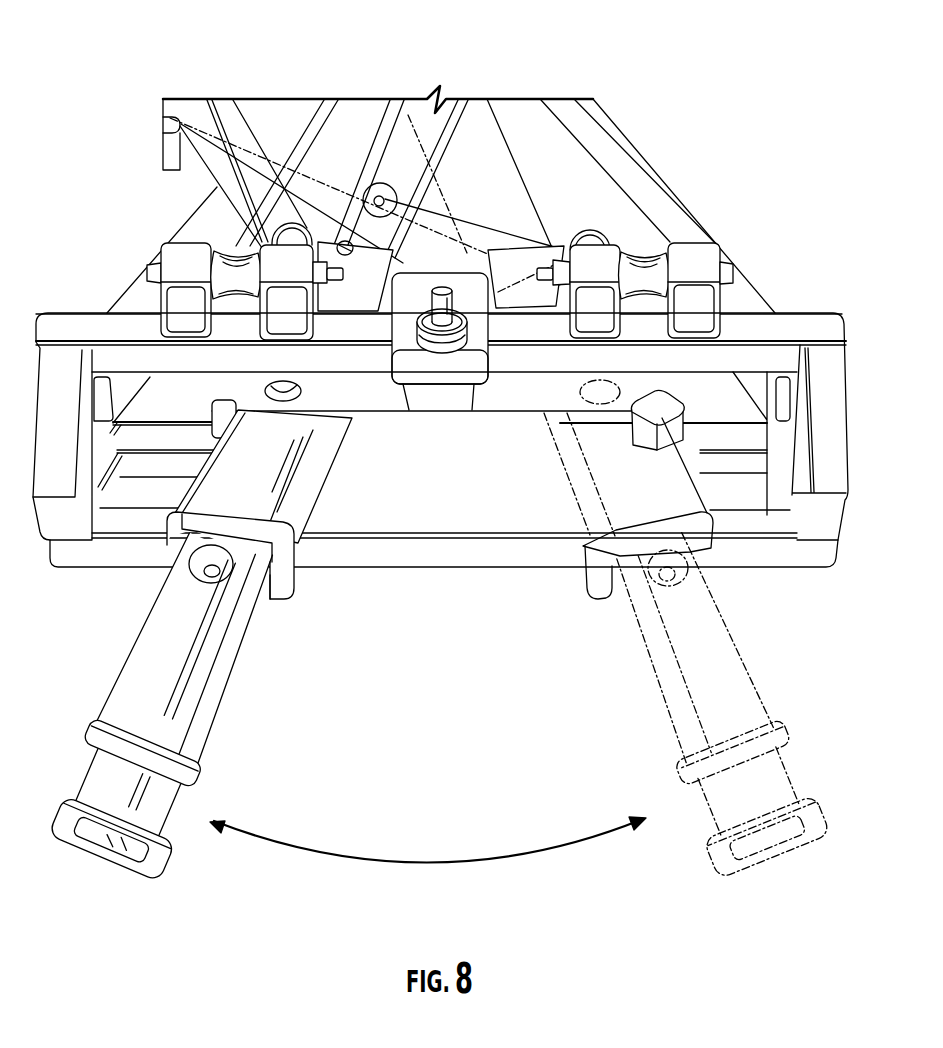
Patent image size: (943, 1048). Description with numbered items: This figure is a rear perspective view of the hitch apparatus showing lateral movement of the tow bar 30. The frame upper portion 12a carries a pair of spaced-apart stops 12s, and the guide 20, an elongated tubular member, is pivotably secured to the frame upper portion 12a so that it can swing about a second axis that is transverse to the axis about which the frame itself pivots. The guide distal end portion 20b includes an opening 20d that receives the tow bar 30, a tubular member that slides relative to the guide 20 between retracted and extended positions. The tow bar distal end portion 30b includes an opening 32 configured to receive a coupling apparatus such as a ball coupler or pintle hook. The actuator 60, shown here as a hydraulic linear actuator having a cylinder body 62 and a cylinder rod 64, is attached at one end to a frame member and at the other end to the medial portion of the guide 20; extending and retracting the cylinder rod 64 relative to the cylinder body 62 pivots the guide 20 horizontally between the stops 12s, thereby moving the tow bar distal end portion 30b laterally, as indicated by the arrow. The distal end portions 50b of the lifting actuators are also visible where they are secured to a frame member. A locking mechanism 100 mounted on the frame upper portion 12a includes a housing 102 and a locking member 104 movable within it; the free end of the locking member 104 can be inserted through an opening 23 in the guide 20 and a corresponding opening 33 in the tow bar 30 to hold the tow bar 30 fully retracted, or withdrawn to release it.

The frame upper portion 12a is at (590, 66).
The stops 12s is at (214, 433).
The guide 20 is at (305, 487).
The guide distal end portion 20b is at (295, 532).
The opening 20d is at (293, 595).
The opening 23 is at (301, 390).
The tow bar 30 is at (247, 620).
The tow bar distal end portion 30b is at (170, 803).
The opening 32 is at (118, 840).
The opening 33 is at (192, 541).
The actuator distal end portion 50b is at (230, 250).
The actuator 60 is at (218, 172).
The cylinder body 62 is at (345, 172).
The cylinder rod 64 is at (505, 300).
The locking mechanism 100 is at (454, 336).
The housing 102 is at (447, 370).
The locking member 104 is at (470, 298).